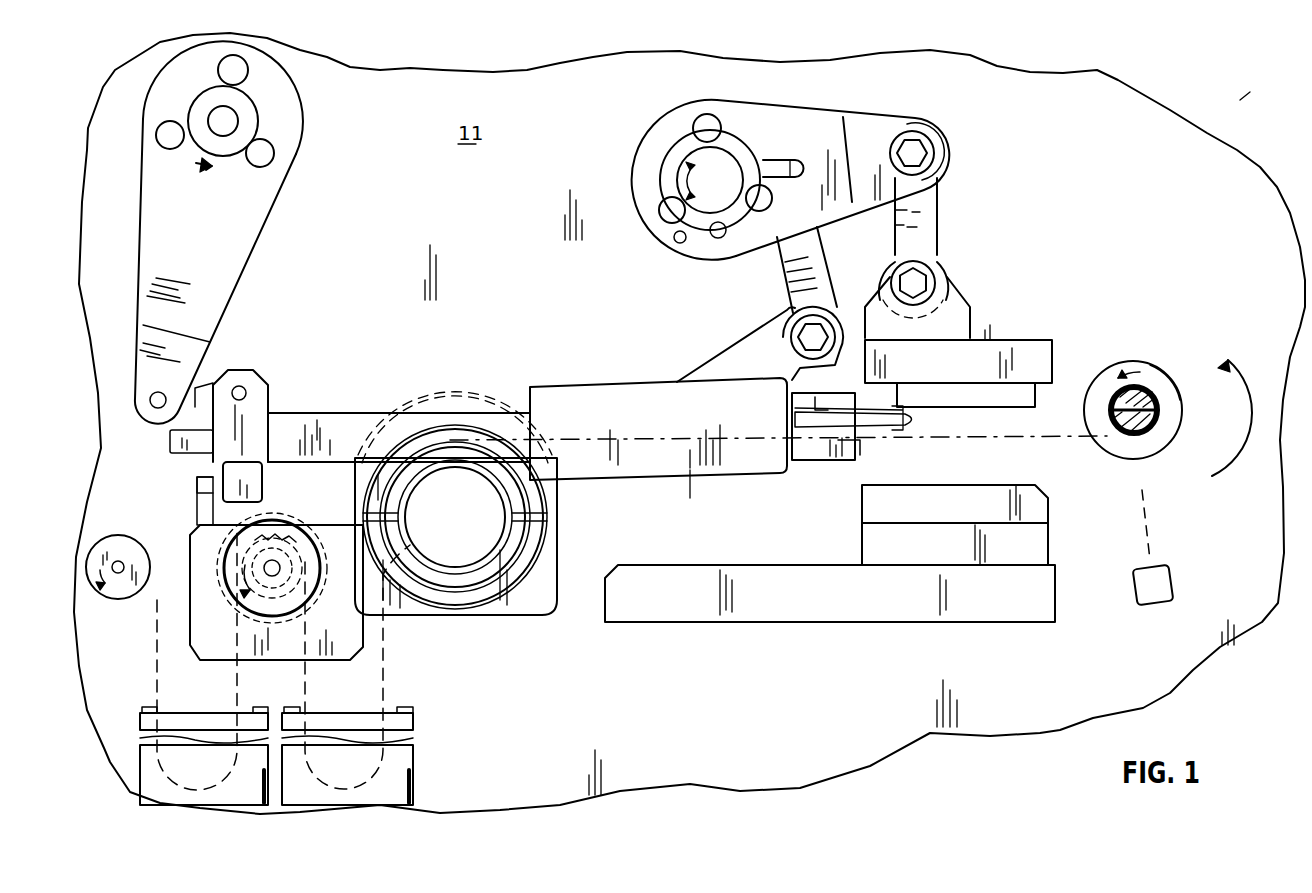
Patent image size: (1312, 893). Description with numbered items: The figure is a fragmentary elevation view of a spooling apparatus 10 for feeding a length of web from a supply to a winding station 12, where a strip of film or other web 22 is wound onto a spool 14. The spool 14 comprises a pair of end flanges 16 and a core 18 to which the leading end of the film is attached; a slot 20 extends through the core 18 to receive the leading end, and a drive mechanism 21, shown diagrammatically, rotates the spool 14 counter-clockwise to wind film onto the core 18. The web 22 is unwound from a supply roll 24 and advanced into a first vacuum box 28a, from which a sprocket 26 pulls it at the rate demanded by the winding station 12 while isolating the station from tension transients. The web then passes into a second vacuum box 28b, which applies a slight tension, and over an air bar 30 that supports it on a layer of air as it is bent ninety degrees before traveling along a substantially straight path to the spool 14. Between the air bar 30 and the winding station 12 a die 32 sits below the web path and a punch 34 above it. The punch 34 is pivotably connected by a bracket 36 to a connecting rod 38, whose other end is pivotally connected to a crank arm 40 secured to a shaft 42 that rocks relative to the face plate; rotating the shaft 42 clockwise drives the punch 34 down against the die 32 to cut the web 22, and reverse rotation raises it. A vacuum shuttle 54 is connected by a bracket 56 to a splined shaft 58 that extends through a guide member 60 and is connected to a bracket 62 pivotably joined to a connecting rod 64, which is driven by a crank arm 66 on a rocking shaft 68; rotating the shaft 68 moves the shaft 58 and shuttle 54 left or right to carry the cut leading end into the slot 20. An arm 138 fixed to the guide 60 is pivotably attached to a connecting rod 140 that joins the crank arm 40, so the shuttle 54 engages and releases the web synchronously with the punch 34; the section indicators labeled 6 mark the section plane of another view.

The spooling apparatus 10 is at (1212, 124).
The winding station 12 is at (1172, 502).
The spool 14 is at (1157, 362).
The end flanges 16 is at (1168, 386).
The core 18 is at (1130, 435).
The slot 20 is at (1160, 412).
The drive mechanism 21 is at (1138, 602).
The web 22 is at (362, 690).
The supply roll 24 is at (120, 600).
The sprocket 26 is at (250, 600).
The first vacuum box 28a is at (128, 728).
The second vacuum box 28b is at (418, 758).
The air bar 30 is at (530, 590).
The die 32 is at (1043, 540).
The punch 34 is at (922, 390).
The bracket 36 is at (875, 298).
The connecting rod 38 is at (932, 215).
The crank arm 40 is at (820, 125).
The shaft 42 is at (735, 178).
The vacuum shuttle 54 is at (818, 512).
The bracket 56 is at (838, 461).
The splined shaft 58 is at (340, 415).
The guide member 60 is at (605, 395).
The bracket 62 is at (252, 412).
The connecting rod 64 is at (200, 385).
The crank arm 66 is at (193, 266).
The shaft 68 is at (258, 115).
The arm 138 is at (712, 360).
The connecting rod 140 is at (792, 300).
The section line 6- 6 is at (817, 298).